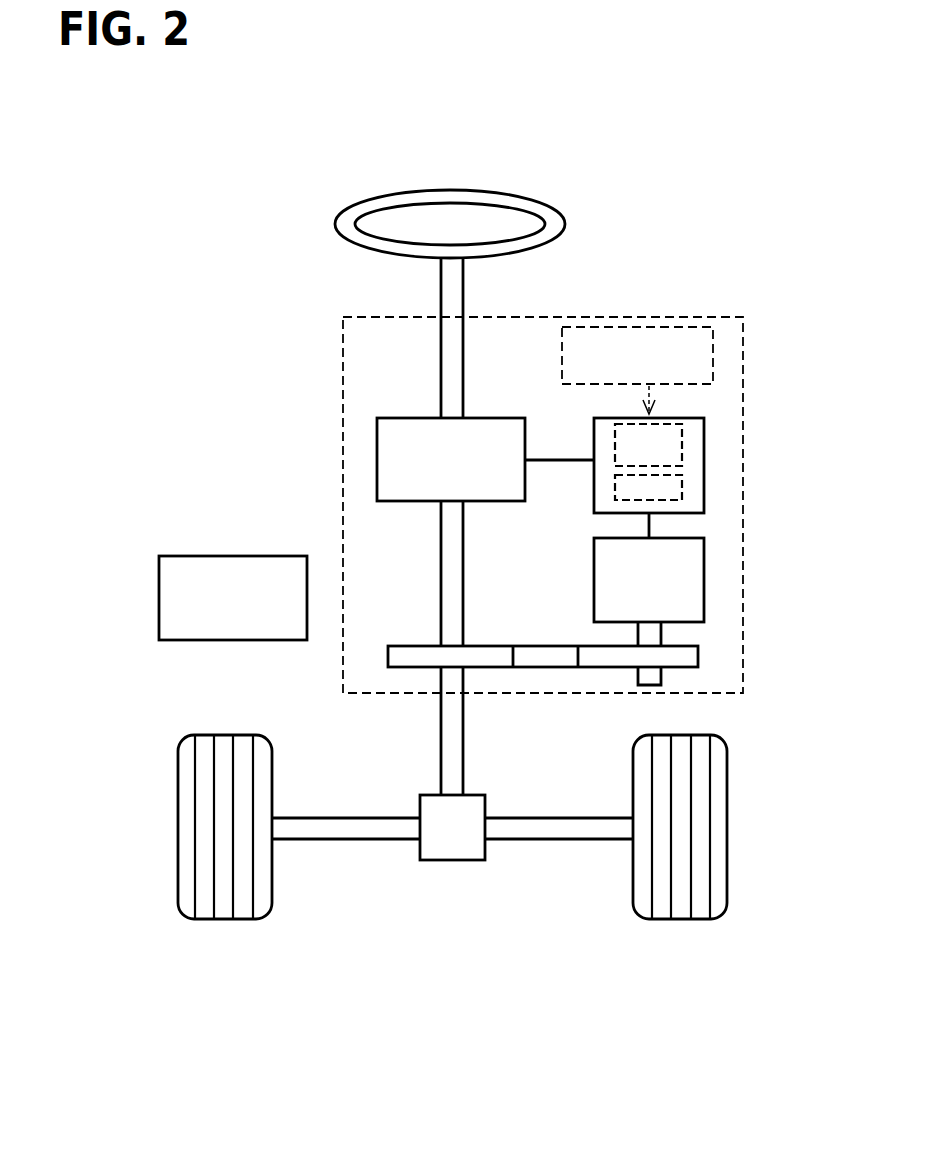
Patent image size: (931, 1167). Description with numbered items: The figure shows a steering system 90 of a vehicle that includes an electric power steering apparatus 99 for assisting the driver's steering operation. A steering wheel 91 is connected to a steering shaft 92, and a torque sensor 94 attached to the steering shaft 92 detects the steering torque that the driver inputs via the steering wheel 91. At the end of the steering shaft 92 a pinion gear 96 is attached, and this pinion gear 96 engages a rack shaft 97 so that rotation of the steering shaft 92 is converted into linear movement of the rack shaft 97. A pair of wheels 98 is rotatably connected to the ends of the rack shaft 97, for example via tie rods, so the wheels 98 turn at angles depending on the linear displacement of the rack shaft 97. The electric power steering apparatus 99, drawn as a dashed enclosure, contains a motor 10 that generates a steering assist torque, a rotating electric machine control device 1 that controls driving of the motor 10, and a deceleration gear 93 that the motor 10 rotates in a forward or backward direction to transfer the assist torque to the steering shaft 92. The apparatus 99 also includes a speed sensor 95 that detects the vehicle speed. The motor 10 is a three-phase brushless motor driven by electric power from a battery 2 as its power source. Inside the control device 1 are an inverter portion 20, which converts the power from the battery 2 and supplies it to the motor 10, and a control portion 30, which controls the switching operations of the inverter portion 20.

The rotating electric machine control device 1 is at (704, 418).
The battery 2 is at (222, 557).
The motor 10 is at (704, 570).
The inverter portion 20 is at (682, 485).
The control portion 30 is at (682, 447).
The steering system 90 is at (403, 962).
The steering wheel 91 is at (335, 224).
The steering shaft 92 is at (441, 296).
The deceleration gear 93 is at (698, 658).
The torque sensor 94 is at (377, 462).
The speed sensor 95 is at (713, 362).
The pinion gear 96 is at (443, 861).
The rack shaft 97 is at (340, 840).
The wheels 98 is at (243, 920).
The electric power steering apparatus 99 is at (660, 316).